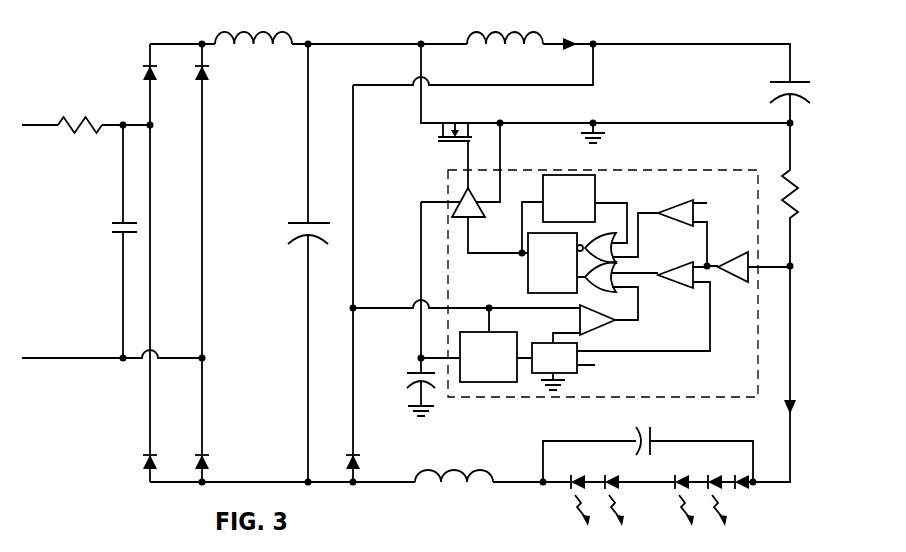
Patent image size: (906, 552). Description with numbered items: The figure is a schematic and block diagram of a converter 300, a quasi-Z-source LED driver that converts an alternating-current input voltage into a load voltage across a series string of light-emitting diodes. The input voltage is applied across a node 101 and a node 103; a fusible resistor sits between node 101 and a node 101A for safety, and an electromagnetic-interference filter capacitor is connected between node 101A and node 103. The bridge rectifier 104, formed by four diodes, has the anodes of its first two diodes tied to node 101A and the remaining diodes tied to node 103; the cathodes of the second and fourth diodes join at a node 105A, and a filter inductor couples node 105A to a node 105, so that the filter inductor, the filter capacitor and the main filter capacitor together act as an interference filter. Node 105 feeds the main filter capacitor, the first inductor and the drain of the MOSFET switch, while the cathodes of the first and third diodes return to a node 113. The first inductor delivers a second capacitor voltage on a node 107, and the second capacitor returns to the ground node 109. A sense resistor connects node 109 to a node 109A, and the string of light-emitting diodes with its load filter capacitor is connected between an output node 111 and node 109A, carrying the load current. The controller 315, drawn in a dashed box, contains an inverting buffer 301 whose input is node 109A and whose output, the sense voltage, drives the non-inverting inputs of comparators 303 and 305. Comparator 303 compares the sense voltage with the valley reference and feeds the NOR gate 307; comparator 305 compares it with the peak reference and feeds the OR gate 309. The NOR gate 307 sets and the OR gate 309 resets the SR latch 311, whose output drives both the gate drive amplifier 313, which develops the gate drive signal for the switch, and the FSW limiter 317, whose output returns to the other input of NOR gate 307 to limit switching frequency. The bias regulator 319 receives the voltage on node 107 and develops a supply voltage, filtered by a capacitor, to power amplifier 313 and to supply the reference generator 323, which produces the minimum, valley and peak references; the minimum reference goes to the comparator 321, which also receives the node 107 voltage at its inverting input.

The node 101 is at (50, 125).
The node 101A is at (150, 125).
The node 103 is at (50, 358).
The bridge rectifier 104 is at (195, 153).
The node 105 is at (308, 44).
The node 105A is at (204, 47).
The node 107 is at (593, 44).
The node 109 is at (790, 123).
The node 109A is at (790, 266).
The node 111 is at (543, 482).
The node 113 is at (306, 480).
The converter 300 is at (92, 483).
The inverting buffer 301 is at (748, 283).
The comparator 303 is at (670, 202).
The comparator 305 is at (675, 266).
The logic gate 307 is at (619, 261).
The logic gate 309 is at (619, 290).
The set-reset (SR) latch 311 is at (560, 283).
The gate drive amplifier 313 is at (452, 210).
The controller 315 is at (448, 190).
The frequency switching (FSW) limiter 317 is at (563, 175).
The bias regulator 319 is at (483, 332).
The comparator 321 is at (610, 315).
The reference generator 323 is at (535, 343).